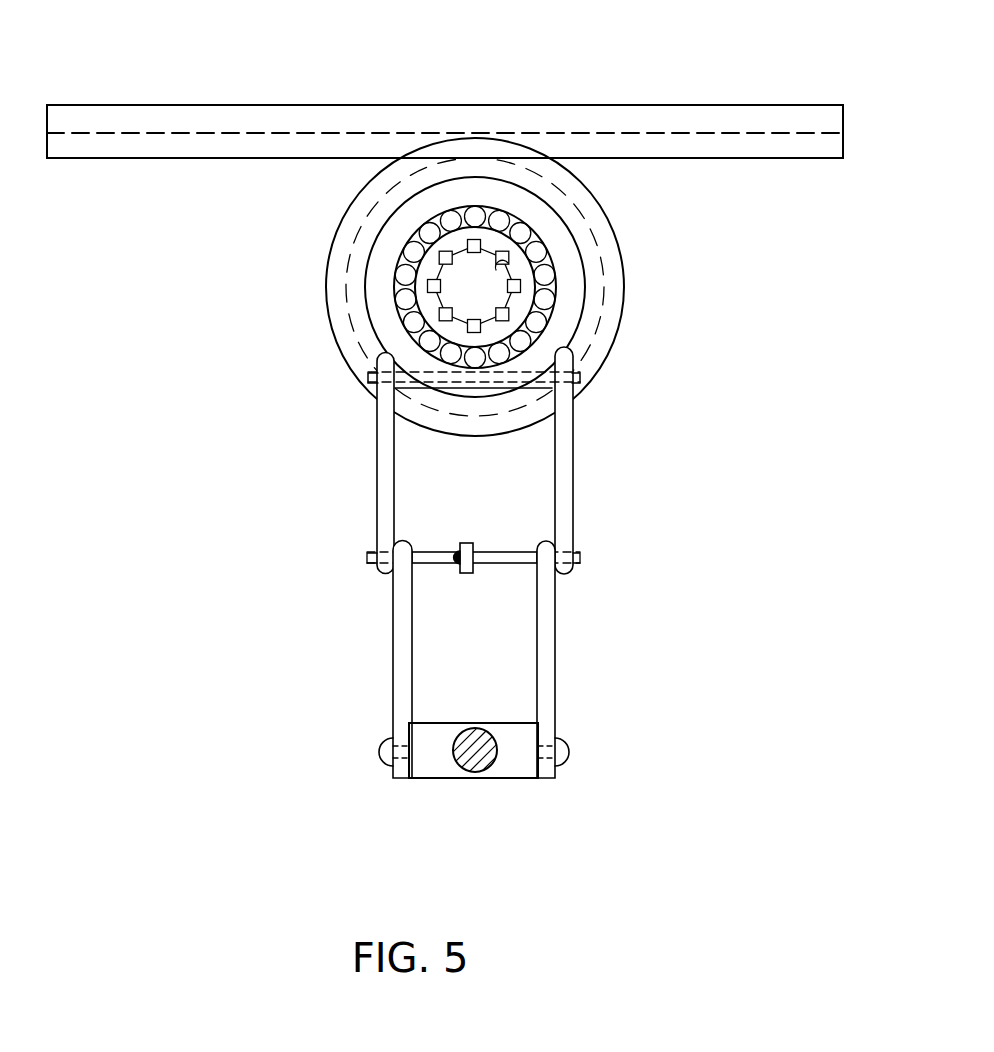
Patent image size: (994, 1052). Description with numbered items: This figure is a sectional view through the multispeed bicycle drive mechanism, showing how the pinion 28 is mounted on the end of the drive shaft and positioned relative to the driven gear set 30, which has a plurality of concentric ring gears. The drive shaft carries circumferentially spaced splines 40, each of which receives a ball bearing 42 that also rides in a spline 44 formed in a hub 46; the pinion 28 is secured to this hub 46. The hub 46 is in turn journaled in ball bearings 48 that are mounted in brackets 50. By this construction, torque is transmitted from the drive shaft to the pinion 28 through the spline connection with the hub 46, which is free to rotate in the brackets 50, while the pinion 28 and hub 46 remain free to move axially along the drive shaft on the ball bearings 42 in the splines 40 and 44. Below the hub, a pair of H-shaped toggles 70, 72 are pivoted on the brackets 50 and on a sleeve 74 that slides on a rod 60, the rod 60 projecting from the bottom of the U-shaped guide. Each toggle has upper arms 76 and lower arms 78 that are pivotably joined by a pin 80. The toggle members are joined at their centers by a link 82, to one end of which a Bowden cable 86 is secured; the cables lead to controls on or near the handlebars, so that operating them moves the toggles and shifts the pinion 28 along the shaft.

The pinion 28 is at (514, 287).
The driven gear set 30 is at (557, 106).
The spline 40 is at (512, 272).
The ball bearing 42 is at (469, 212).
The spline 44 is at (448, 253).
The hub 46 is at (425, 268).
The ball bearings 48 is at (550, 305).
The brackets 50 is at (403, 357).
The rod 60 is at (480, 765).
The H-shaped toggle 70 is at (423, 654).
The H-shaped toggle 72 is at (464, 654).
The sleeve 74 is at (426, 765).
The upper arms 76 is at (383, 456).
The lower arms 78 is at (400, 649).
The pin 80 is at (517, 553).
The link 82 is at (472, 543).
The Bowden cable 86 is at (455, 553).